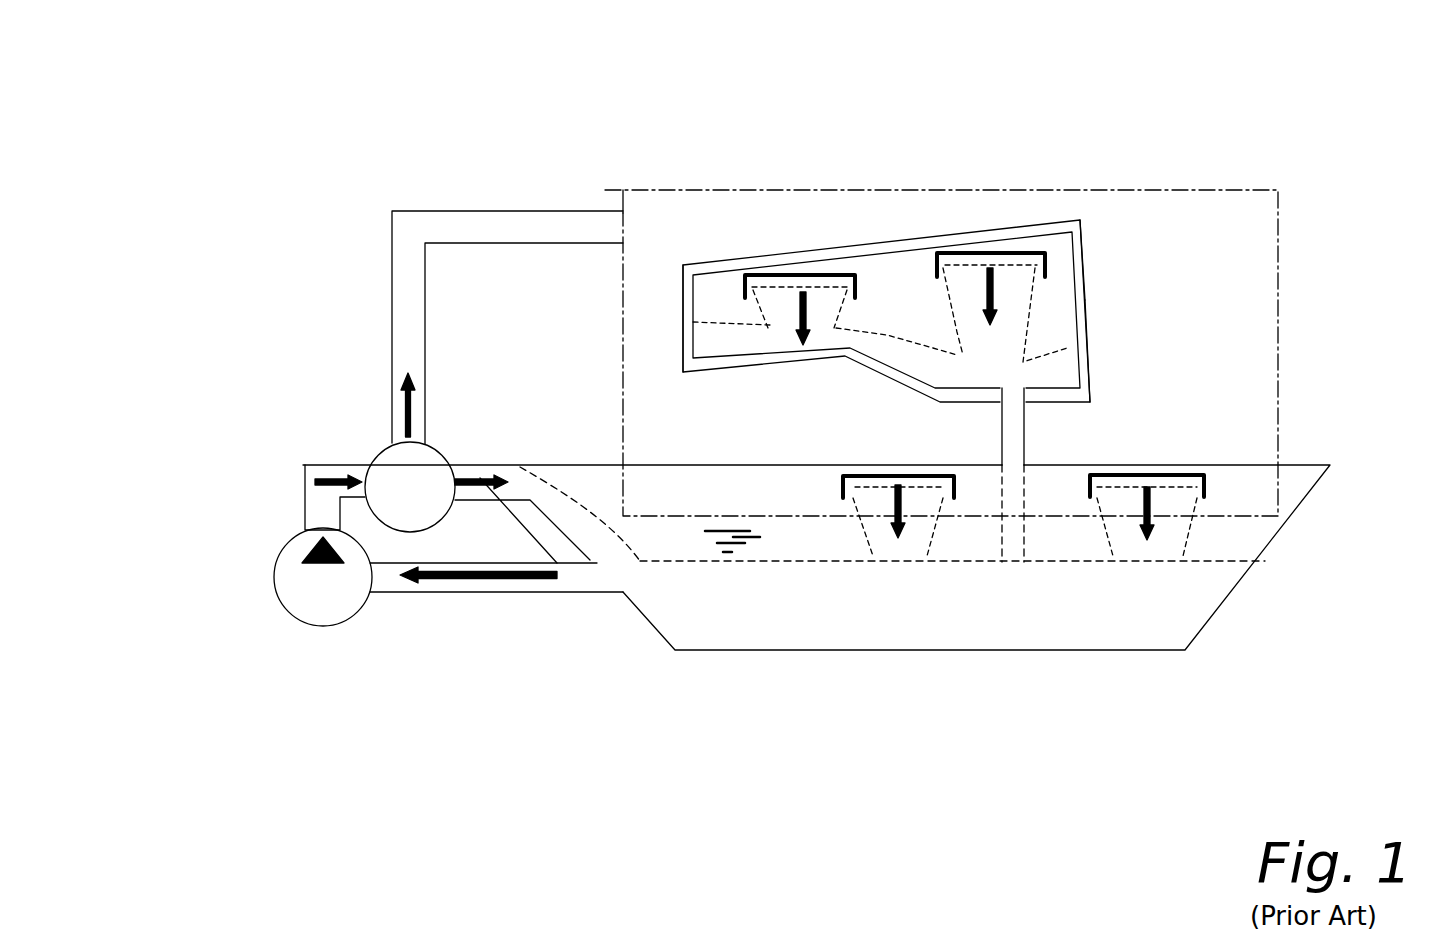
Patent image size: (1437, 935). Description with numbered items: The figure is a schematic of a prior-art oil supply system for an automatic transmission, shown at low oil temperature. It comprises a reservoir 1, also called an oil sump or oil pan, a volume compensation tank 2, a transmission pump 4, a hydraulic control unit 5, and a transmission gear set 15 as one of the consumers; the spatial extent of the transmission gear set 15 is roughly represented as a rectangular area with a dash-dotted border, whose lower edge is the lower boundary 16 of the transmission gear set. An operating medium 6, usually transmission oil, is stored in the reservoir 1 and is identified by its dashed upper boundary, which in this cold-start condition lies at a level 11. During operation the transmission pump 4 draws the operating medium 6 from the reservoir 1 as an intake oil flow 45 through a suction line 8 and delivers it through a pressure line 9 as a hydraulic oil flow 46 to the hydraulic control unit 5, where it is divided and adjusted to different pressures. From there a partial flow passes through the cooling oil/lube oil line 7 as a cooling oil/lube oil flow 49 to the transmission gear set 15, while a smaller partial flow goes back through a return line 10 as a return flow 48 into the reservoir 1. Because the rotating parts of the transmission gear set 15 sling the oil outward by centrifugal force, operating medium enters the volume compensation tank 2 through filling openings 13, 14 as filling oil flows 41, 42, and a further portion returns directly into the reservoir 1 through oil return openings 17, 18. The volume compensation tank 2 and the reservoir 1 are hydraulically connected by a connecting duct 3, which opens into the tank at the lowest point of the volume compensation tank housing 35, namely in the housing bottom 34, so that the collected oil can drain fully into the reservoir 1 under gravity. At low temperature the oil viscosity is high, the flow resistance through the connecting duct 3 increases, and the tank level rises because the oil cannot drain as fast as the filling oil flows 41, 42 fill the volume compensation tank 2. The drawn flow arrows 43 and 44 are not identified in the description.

The reservoir 1 is at (1246, 634).
The volume compensation tank 2 is at (1106, 241).
The connecting duct 3 is at (1027, 427).
The transmission pump 4 is at (317, 590).
The hydraulic control unit 5 is at (395, 473).
The operating medium 6 is at (845, 561).
The cooling oil/lube oil line 7 is at (392, 260).
The suction line 8 is at (518, 588).
The pressure line 9 is at (323, 510).
The return line 10 is at (480, 470).
The reservoir level 11 is at (757, 537).
The filling opening 13 is at (803, 272).
The filling opening 14 is at (1026, 258).
The transmission gear set 15 is at (605, 187).
The lower boundary of transmission gear set 16 is at (1207, 517).
The oil return opening 17 is at (956, 478).
The oil return opening 18 is at (1207, 482).
The housing bottom 34 is at (1030, 388).
The volume compensation tank housing 35 is at (1090, 301).
The filling oil flow 41 is at (768, 307).
The filling oil flow 42 is at (1087, 317).
The valve seat 43 is at (945, 500).
The flow arrow 44 is at (1150, 508).
The intake oil flow 45 is at (457, 582).
The hydraulic oil flow 46 is at (332, 472).
The return flow 48 is at (557, 565).
The cooling oil/lube oil flow 49 is at (392, 397).